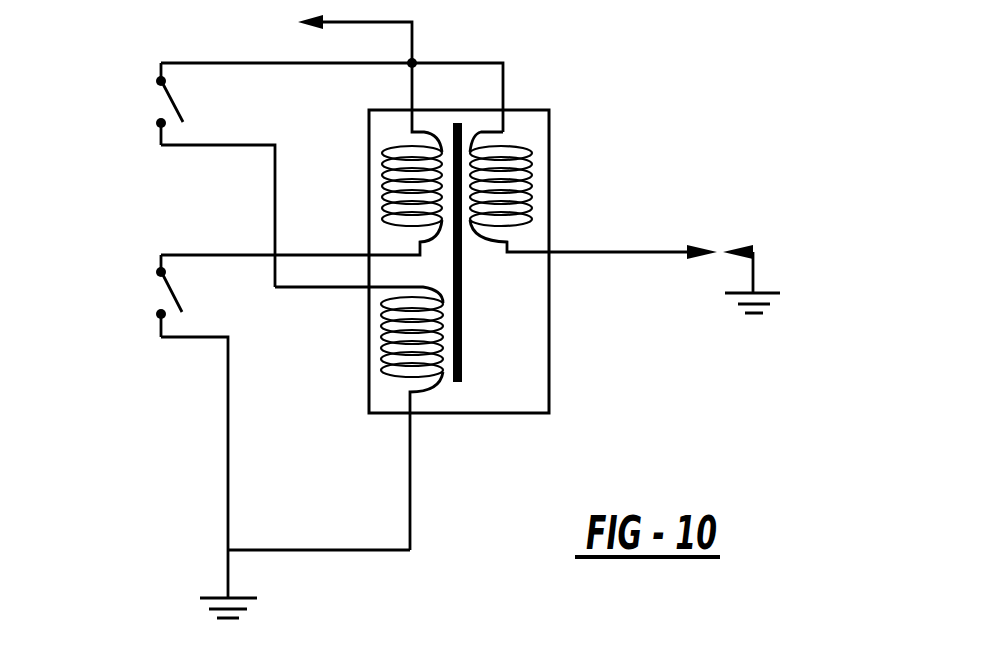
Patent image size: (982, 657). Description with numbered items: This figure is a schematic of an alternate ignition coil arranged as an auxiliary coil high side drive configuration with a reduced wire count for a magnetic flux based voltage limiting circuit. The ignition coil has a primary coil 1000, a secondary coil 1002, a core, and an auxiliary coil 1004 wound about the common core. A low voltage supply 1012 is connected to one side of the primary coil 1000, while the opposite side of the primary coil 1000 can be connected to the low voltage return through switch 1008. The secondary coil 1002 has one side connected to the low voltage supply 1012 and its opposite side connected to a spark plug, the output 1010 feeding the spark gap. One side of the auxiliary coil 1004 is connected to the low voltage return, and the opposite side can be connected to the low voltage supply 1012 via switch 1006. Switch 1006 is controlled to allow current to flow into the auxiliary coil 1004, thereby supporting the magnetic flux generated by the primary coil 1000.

The primary coil 1000 is at (402, 145).
The secondary coil 1002 is at (527, 143).
The auxiliary coil 1004 is at (387, 385).
The switch 1006 is at (158, 103).
The switch 1008 is at (158, 295).
The output to spark gap 1010 is at (717, 263).
The low voltage supply 1012 is at (332, 34).